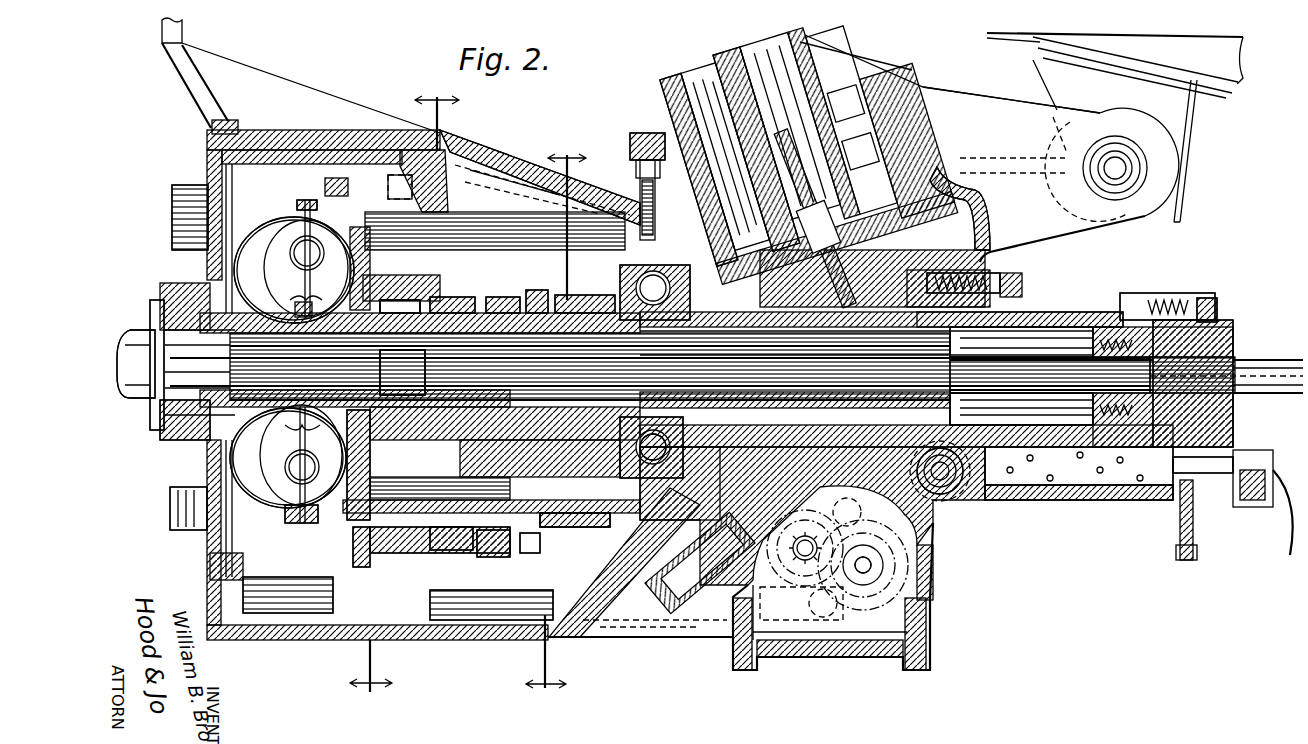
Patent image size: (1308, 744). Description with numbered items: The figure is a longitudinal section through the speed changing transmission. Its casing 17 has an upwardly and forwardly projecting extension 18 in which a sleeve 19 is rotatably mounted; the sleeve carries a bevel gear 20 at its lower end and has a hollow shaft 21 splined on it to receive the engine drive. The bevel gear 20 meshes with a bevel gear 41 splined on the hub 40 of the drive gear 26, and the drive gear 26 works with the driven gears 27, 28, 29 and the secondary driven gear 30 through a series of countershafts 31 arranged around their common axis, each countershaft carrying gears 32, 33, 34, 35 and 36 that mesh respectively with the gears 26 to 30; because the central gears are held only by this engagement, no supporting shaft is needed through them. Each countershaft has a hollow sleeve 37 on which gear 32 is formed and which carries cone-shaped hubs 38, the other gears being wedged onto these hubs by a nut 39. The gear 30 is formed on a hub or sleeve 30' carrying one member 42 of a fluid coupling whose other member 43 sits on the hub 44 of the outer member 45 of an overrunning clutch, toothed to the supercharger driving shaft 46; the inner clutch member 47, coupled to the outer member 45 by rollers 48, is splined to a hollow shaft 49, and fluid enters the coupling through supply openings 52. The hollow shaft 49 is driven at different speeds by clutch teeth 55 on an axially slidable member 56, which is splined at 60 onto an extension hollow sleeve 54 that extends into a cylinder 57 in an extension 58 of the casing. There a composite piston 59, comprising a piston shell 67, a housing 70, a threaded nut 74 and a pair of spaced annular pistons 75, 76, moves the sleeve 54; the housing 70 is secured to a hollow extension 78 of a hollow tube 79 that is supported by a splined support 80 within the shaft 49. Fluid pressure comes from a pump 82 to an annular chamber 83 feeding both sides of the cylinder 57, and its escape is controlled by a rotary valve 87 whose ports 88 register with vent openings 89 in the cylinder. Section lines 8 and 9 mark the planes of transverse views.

The section line 8- 8 is at (404, 395).
The section line 9- 9 is at (560, 423).
The casing 17 is at (545, 162).
The extension 18 is at (944, 140).
The sleeve 19 is at (720, 58).
The bevel gear 20 is at (935, 224).
The hollow shaft 21 is at (768, 52).
The drive gear 26 is at (562, 305).
The driven gear 27 is at (530, 300).
The driven gear 28 is at (488, 312).
The driven gear 29 is at (432, 312).
The secondary driven gear 30 is at (400, 295).
The hub or sleeve 30' is at (396, 282).
The countershaft 31 is at (600, 538).
The countershaft gear 32 is at (568, 550).
The countershaft gear 33 is at (530, 553).
The countershaft gear 34 is at (470, 600).
The countershaft gear 35 is at (441, 600).
The countershaft gear 36 is at (372, 624).
The hollow sleeve 37 is at (362, 545).
The cone-shaped hub 38 is at (438, 553).
The nut 39 is at (353, 535).
The hub 40 is at (676, 440).
The bevel gear 41 is at (681, 460).
The fluid coupling member 42 is at (376, 206).
The fluid coupling member 43 is at (292, 218).
The hub 44 is at (208, 440).
The outer member 45 is at (166, 440).
The driving shaft 46 is at (141, 333).
The inner member 47 is at (176, 400).
The engaging rollers 48 is at (182, 296).
The hollow shaft 49 is at (381, 346).
The supply openings 52 is at (335, 222).
The extension hollow sleeve 54 is at (1006, 388).
The clutch teeth 55 is at (600, 304).
The axially slidable member 56 is at (703, 325).
The cylinder 57 is at (1056, 312).
The extension 58 is at (1030, 312).
The piston 59 is at (1080, 353).
The spline 60 is at (681, 500).
The piston shell 67 is at (1122, 304).
The housing 70 is at (1216, 340).
The threaded nut 74 is at (1202, 310).
The annular piston 75 is at (1092, 401).
The annular piston 76 is at (1150, 450).
The hollow extension 78 is at (1246, 360).
The hollow tube 79 is at (1040, 394).
The splined support 80 is at (266, 470).
The fluid pressure pump 82 is at (905, 577).
The annular chamber 83 is at (950, 493).
The rotary valve 87 is at (1076, 500).
The ports 88 is at (1046, 478).
The vent openings 89 is at (1111, 450).